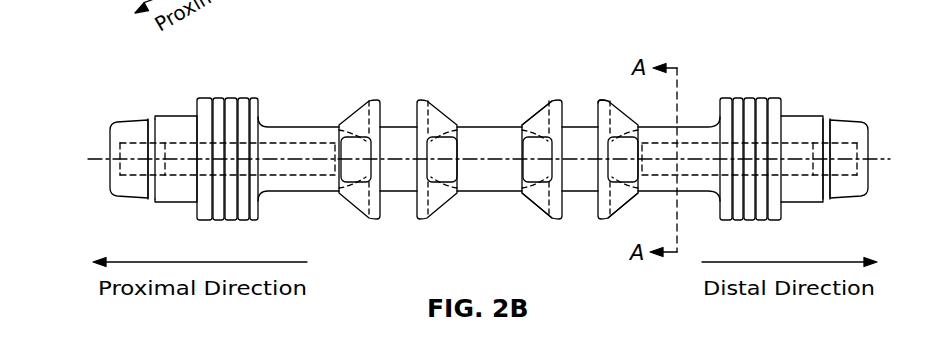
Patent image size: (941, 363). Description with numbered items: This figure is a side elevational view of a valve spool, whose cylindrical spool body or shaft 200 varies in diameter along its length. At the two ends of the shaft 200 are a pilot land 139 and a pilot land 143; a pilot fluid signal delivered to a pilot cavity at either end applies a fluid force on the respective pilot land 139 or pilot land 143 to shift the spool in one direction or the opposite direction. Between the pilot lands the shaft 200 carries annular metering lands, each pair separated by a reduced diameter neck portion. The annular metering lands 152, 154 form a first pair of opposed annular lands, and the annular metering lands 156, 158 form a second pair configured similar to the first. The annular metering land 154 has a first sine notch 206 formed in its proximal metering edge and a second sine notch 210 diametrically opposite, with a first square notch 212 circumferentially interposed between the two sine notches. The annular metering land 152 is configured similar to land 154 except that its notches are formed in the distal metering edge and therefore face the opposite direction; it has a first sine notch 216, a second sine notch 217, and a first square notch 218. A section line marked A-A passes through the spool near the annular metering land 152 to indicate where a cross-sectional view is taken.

The shaft 200 is at (836, 99).
The pilot land 139 is at (763, 100).
The pilot land 143 is at (229, 105).
The annular metering land 152 is at (603, 100).
The annular metering land 154 is at (555, 100).
The annular metering land 156 is at (422, 100).
The annular metering land 158 is at (374, 100).
The first sine notch 206 is at (520, 102).
The second sine notch 210 is at (526, 203).
The first square notch 212 is at (538, 176).
The first sine notch 216 is at (622, 89).
The second sine notch 217 is at (617, 216).
The first square notch 218 is at (632, 178).